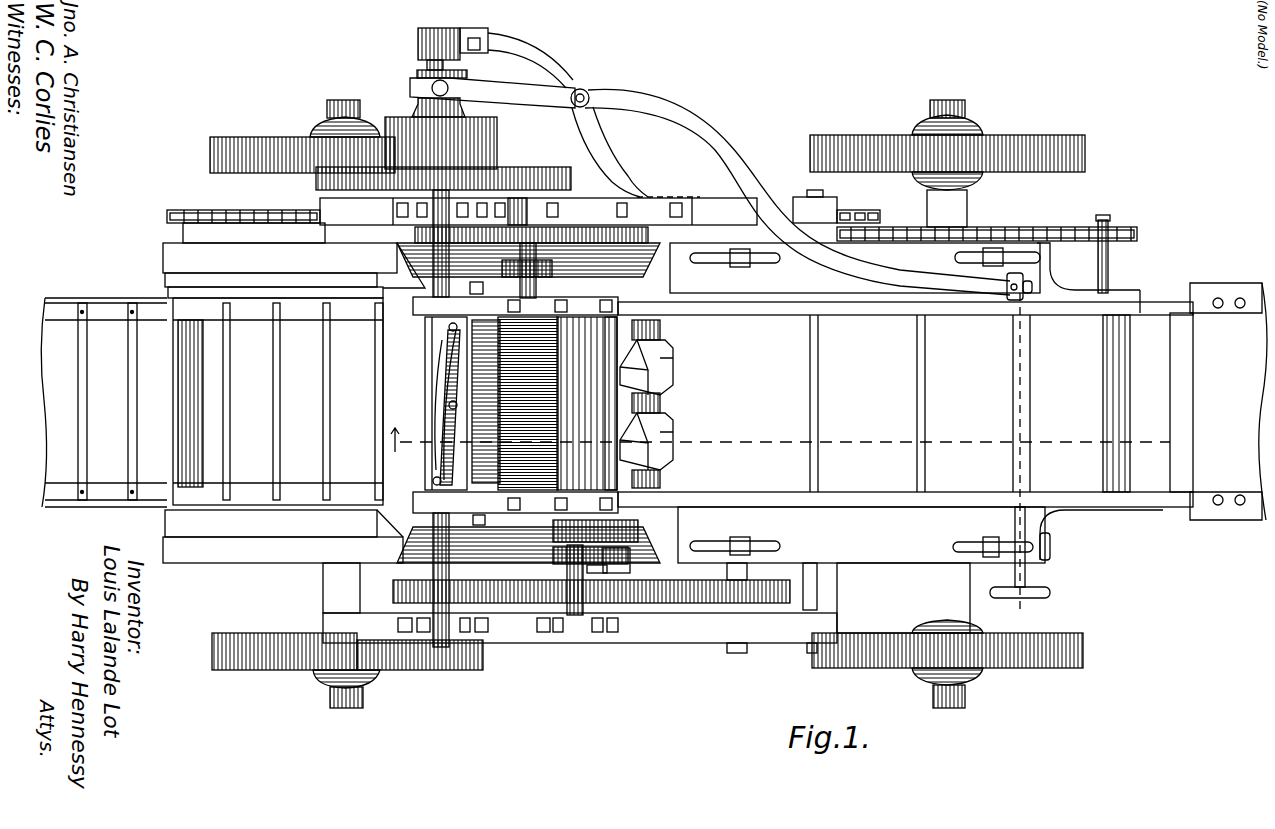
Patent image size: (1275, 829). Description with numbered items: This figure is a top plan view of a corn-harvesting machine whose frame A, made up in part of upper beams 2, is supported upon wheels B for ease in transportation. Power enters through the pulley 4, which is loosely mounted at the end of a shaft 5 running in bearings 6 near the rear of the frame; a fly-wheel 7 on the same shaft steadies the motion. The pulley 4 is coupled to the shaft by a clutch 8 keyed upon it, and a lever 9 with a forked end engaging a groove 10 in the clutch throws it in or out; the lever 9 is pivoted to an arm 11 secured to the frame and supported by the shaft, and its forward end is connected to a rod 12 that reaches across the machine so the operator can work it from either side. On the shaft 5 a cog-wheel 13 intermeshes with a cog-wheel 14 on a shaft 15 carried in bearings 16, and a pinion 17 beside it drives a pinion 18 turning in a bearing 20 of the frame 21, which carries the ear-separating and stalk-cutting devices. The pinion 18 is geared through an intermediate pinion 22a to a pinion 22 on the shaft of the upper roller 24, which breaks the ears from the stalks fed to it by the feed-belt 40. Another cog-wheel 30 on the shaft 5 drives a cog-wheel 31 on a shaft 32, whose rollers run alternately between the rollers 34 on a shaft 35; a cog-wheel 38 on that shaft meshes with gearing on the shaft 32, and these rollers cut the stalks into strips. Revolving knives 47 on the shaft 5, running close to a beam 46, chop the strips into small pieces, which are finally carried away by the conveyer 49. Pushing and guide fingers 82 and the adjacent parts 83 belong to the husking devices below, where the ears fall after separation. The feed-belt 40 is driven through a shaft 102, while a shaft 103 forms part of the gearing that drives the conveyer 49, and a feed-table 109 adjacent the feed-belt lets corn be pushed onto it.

The upper beams 2 is at (294, 393).
The pulley 4 is at (497, 135).
The shaft 5 is at (440, 572).
The bearings 6 is at (442, 210).
The fly-wheel 7 is at (520, 235).
The clutch 8 is at (420, 68).
The lever 9 is at (532, 92).
The groove 10 is at (410, 95).
The arm 11 is at (613, 150).
The rod 12 is at (1055, 580).
The cog-wheel 13 is at (393, 597).
The cog-wheel 14 is at (645, 600).
The shaft 15 is at (530, 640).
The bearings 16 is at (578, 630).
The pinion 17 is at (587, 567).
The pinion 18 is at (637, 563).
The bearing 20 is at (630, 503).
The frame 21 is at (543, 303).
The pinion 22 is at (557, 533).
The intermediate pinion 22a is at (633, 527).
The roller 24 is at (582, 392).
The cog-wheel 30 is at (415, 233).
The cog-wheel 31 is at (527, 258).
The shaft 32 is at (560, 215).
The rollers 34 is at (500, 477).
The shaft 35 is at (460, 288).
The cog-wheel 38 is at (470, 262).
The feed-belt 40 is at (905, 426).
The beam 46 is at (470, 372).
The revolving knives 47 is at (443, 410).
The conveyer 49 is at (104, 402).
The fingers 82 is at (673, 342).
The cam 83 is at (673, 470).
The shaft 102 is at (1108, 277).
The shaft 103 is at (178, 230).
The feed-table 109 is at (1218, 401).
The frame A is at (783, 203).
The wheels B is at (290, 155).